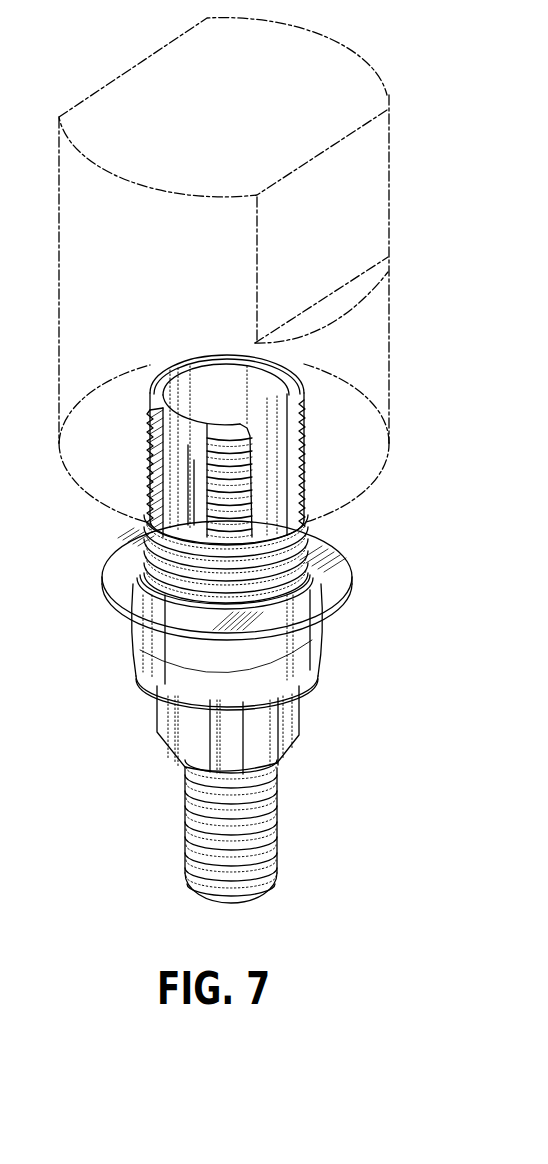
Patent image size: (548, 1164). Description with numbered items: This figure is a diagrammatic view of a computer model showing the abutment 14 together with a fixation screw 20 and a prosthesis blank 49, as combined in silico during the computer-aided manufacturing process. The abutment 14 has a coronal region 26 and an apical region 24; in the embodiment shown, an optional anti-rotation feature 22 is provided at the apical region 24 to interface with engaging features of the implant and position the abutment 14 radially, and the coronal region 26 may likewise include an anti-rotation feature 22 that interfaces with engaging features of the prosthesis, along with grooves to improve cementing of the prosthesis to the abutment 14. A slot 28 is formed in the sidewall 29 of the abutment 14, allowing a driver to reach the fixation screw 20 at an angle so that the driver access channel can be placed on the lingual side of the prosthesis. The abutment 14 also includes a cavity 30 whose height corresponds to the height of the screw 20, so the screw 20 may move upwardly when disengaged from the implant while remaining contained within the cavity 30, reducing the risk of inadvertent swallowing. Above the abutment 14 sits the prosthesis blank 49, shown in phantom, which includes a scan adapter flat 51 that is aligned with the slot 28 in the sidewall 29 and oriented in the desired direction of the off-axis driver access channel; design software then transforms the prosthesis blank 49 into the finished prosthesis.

The prosthesis blank 49 is at (107, 85).
The scan adapter flat 51 is at (361, 212).
The coronal region 26 is at (236, 355).
The cavity 30 is at (200, 392).
The sidewall 29 is at (260, 392).
The slot 28 is at (306, 472).
The anti-rotation feature 22 is at (150, 502).
The abutment 14 is at (320, 650).
The apical region 24 is at (290, 735).
The fixation screw 20 is at (186, 814).